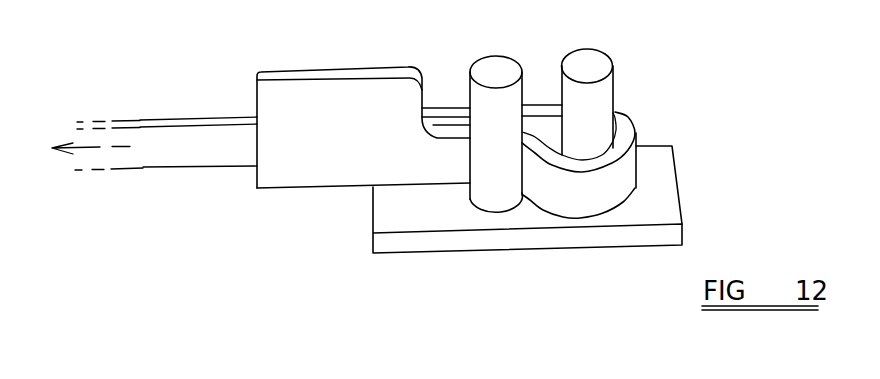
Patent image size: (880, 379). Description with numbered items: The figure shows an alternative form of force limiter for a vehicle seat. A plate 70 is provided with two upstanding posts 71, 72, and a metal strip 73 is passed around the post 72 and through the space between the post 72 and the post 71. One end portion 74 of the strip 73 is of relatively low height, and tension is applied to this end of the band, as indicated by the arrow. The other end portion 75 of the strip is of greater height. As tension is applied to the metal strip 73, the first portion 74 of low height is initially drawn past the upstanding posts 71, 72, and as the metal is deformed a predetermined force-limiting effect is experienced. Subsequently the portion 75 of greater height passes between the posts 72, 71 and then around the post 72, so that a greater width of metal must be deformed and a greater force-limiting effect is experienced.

The plate 70 is at (578, 238).
The post 71 is at (485, 68).
The post 72 is at (588, 65).
The metal strip 73 is at (177, 120).
The end portion 74 is at (193, 153).
The end portion 75 is at (310, 170).